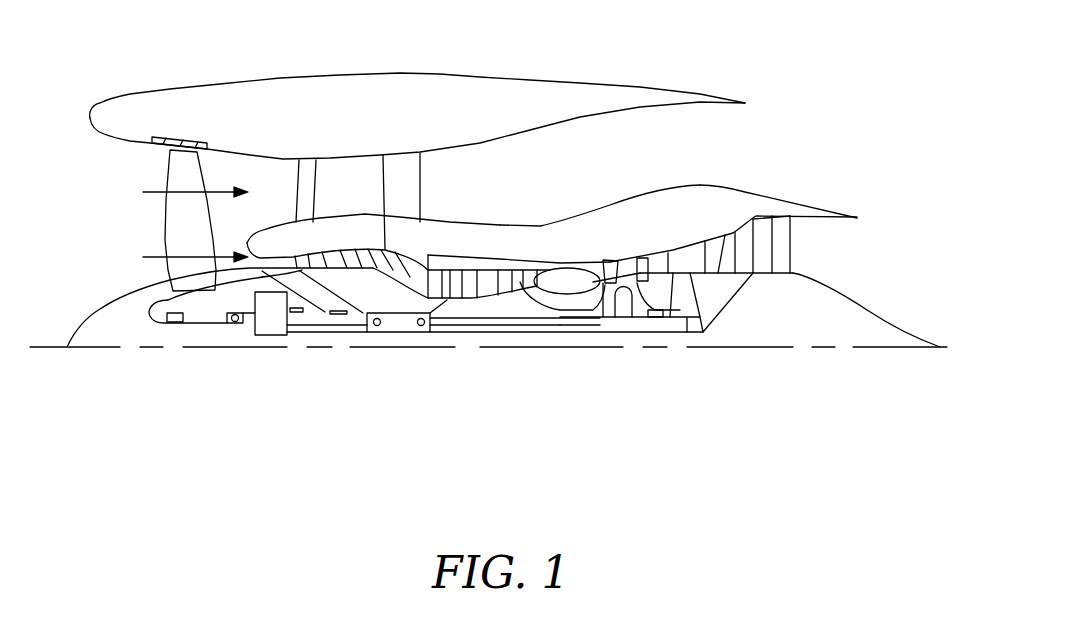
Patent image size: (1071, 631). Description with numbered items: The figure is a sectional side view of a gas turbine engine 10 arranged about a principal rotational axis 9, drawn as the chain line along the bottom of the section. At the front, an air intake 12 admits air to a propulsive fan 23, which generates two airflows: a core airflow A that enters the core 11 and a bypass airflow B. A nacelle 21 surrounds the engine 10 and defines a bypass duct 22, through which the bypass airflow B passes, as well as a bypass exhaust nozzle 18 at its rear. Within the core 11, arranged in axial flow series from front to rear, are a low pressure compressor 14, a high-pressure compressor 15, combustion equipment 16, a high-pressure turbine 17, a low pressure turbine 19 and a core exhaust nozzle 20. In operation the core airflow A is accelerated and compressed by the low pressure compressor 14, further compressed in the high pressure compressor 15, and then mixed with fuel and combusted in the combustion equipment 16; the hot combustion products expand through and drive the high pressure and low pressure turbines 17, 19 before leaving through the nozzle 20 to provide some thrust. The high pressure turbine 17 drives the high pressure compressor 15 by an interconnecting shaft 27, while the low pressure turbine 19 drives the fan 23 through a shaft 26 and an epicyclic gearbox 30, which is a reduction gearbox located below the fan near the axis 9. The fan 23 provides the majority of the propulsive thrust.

The principal rotational axis 9 is at (647, 349).
The gas turbine engine 10 is at (168, 90).
The core 11 is at (533, 243).
The air intake 12 is at (120, 170).
The low pressure compressor 14 is at (342, 250).
The high-pressure compressor 15 is at (487, 283).
The combustion equipment 16 is at (557, 287).
The high-pressure turbine 17 is at (625, 262).
The bypass exhaust nozzle 18 is at (737, 140).
The low pressure turbine 19 is at (762, 233).
The core exhaust nozzle 20 is at (822, 245).
The nacelle 21 is at (397, 88).
The bypass duct 22 is at (690, 153).
The propulsive fan 23 is at (170, 222).
The shaft 26 is at (480, 334).
The interconnecting shaft 27 is at (515, 335).
The epicyclic gearbox 30 is at (263, 330).